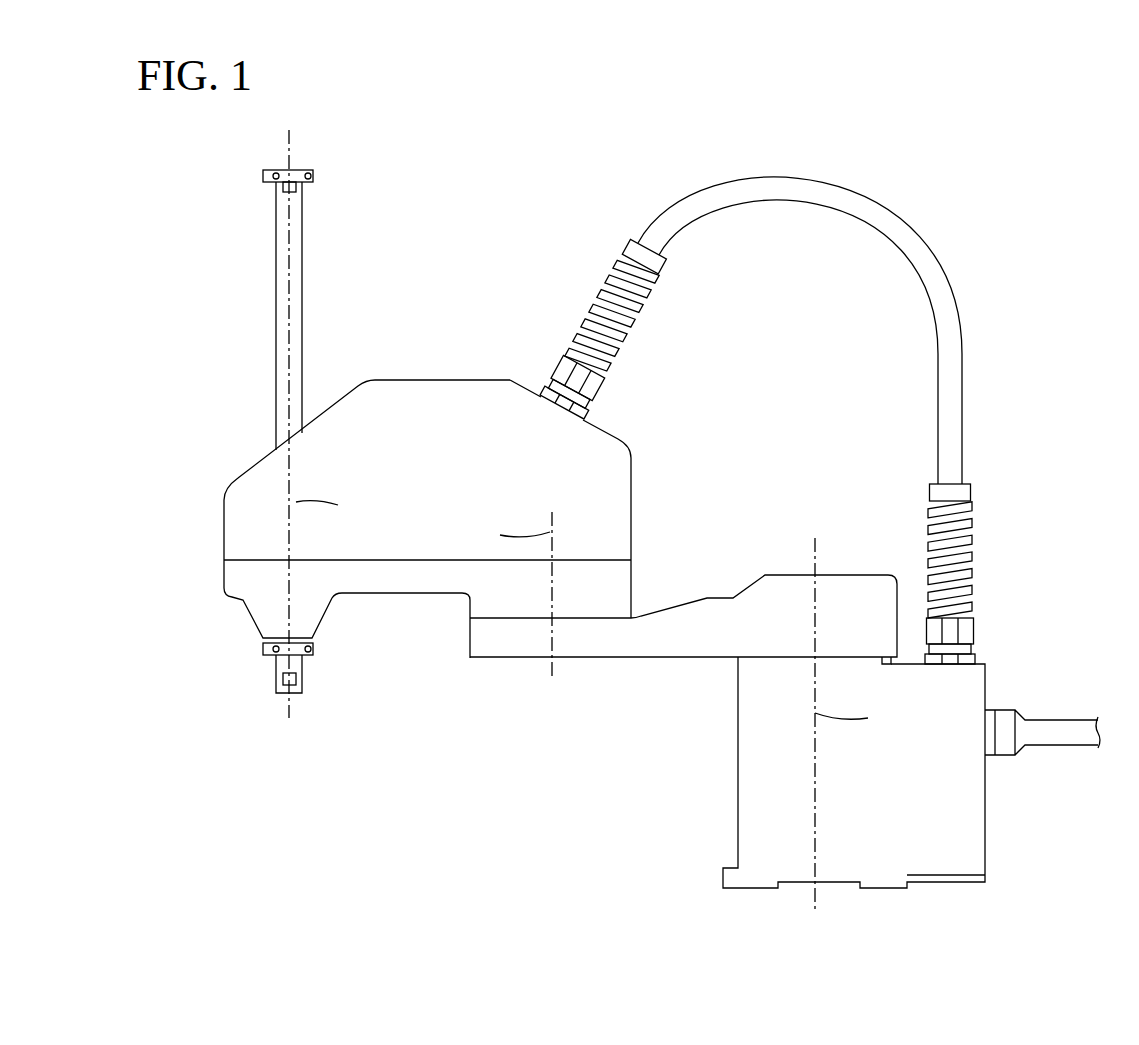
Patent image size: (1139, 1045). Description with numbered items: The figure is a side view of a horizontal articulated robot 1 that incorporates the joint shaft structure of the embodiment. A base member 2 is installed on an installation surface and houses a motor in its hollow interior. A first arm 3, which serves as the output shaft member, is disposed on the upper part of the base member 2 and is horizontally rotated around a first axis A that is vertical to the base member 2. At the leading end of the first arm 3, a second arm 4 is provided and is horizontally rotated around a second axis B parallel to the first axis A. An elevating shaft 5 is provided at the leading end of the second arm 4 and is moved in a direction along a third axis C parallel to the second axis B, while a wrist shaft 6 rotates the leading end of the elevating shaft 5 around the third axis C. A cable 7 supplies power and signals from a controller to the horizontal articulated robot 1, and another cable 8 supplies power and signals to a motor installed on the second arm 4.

The horizontal articulated robot 1 is at (462, 135).
The base member 2 is at (1003, 826).
The first arm 3 is at (855, 560).
The second arm 4 is at (650, 572).
The elevating shaft 5 is at (320, 288).
The wrist shaft 6 is at (300, 168).
The cable 7 is at (1058, 717).
The cable 8 is at (785, 176).